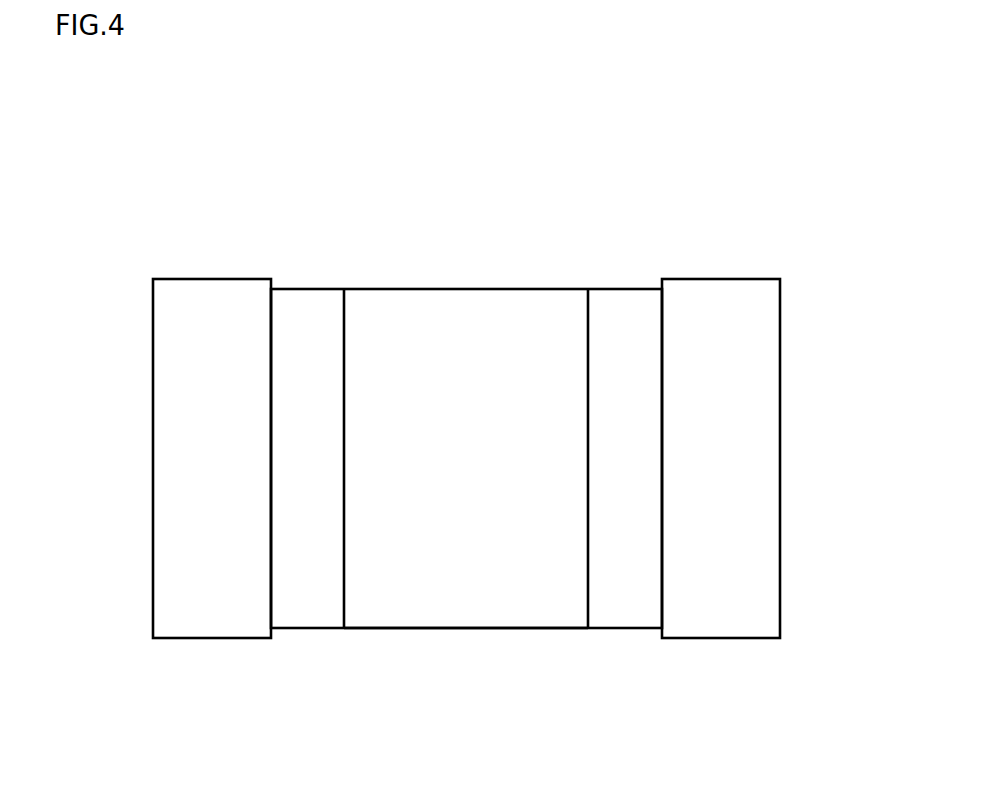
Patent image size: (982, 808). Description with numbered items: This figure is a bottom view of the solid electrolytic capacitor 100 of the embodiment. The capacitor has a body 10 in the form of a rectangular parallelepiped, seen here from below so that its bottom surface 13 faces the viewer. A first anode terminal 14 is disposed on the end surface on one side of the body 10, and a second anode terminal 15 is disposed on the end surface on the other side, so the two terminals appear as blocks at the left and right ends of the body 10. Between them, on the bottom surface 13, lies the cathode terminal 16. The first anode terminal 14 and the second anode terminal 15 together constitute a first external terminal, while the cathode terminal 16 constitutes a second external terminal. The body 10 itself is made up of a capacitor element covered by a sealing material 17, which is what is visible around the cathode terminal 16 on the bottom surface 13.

The solid electrolytic capacitor 100 is at (462, 400).
The body 10 is at (466, 444).
The bottom surface 13 is at (627, 310).
The first anode terminal 14 is at (182, 455).
The second anode terminal 15 is at (737, 445).
The cathode terminal 16 is at (473, 593).
The sealing material 17 is at (299, 612).